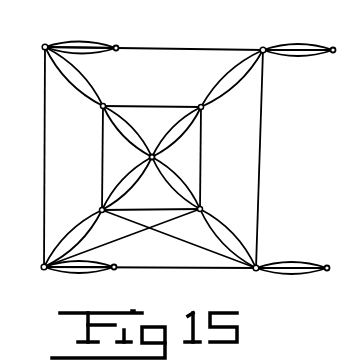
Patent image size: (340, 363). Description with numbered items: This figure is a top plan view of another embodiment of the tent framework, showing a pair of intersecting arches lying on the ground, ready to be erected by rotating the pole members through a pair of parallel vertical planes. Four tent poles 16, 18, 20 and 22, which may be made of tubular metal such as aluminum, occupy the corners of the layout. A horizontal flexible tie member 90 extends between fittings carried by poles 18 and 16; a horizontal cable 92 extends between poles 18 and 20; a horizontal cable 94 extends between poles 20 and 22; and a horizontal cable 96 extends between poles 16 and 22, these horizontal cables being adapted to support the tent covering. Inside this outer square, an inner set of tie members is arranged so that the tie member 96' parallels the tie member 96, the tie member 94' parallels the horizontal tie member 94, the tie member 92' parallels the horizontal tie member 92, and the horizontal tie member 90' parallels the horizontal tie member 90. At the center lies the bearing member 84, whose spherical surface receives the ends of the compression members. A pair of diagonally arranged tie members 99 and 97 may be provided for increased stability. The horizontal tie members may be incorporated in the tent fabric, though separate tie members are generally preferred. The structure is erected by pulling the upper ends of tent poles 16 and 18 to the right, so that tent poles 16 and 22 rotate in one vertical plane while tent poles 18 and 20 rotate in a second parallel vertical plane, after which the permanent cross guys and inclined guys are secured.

The tent pole 16 is at (298, 43).
The tent pole 18 is at (295, 275).
The tent pole 20 is at (84, 275).
The tent pole 22 is at (83, 42).
The bearing member 84 is at (157, 158).
The horizontal flexible tie member 90 is at (279, 159).
The horizontal tie member 90' is at (220, 158).
The horizontal cable 92 is at (150, 283).
The tie member 92' is at (151, 197).
The horizontal cable 94 is at (27, 157).
The tie member 94' is at (84, 158).
The horizontal cable 96 is at (154, 36).
The tie member 96' is at (152, 90).
The diagonally arranged tie member 97 is at (202, 230).
The diagonally arranged tie member 99 is at (110, 243).